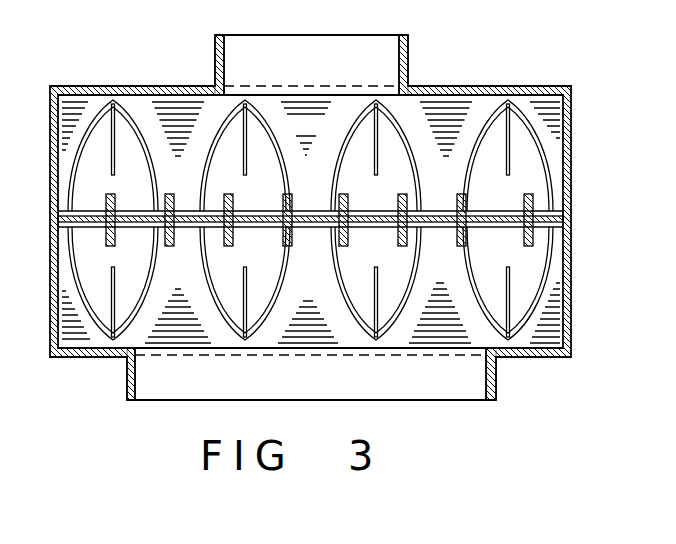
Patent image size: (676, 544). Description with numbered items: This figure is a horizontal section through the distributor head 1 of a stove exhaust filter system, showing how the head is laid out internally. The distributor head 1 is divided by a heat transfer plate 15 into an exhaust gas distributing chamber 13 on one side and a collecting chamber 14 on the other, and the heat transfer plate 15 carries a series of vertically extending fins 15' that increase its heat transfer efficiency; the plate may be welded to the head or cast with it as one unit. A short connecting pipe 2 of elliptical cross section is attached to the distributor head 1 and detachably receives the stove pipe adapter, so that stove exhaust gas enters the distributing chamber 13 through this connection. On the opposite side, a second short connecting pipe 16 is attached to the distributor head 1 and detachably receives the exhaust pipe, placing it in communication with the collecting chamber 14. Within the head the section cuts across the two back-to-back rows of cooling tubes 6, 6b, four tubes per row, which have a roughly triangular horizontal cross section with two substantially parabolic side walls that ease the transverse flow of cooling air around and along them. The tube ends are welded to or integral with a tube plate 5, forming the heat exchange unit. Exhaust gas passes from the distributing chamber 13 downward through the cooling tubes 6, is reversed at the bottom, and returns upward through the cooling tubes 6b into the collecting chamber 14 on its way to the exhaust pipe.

The distributor head 1 is at (572, 133).
The short connecting pipe 2 is at (127, 388).
The tube plate 5 is at (190, 100).
The cooling tubes 6 is at (348, 247).
The cooling tubes 6b is at (348, 192).
The exhaust gas distributing chamber 13 is at (308, 312).
The collecting chamber 14 is at (312, 129).
The heat transfer plate 15 is at (310, 220).
The vertically extending fins 15' is at (319, 227).
The short connecting pipe 16 is at (408, 42).